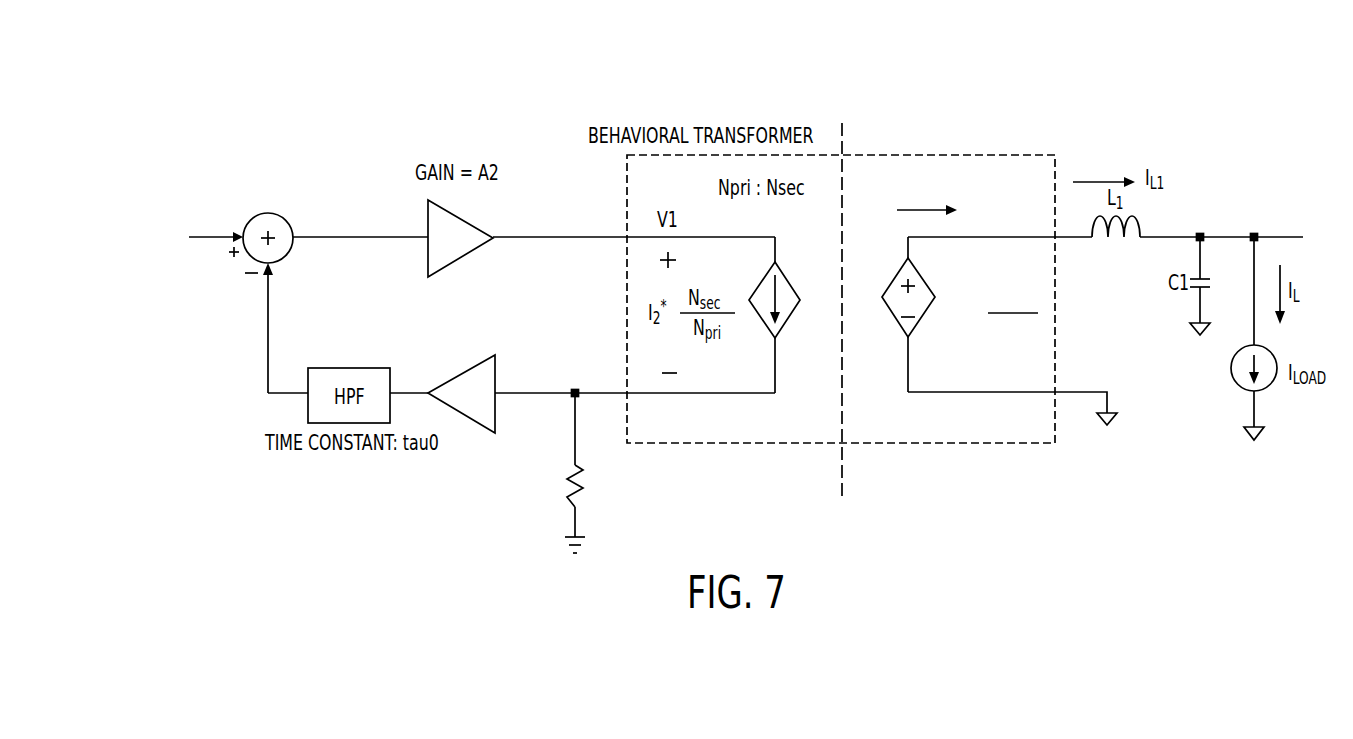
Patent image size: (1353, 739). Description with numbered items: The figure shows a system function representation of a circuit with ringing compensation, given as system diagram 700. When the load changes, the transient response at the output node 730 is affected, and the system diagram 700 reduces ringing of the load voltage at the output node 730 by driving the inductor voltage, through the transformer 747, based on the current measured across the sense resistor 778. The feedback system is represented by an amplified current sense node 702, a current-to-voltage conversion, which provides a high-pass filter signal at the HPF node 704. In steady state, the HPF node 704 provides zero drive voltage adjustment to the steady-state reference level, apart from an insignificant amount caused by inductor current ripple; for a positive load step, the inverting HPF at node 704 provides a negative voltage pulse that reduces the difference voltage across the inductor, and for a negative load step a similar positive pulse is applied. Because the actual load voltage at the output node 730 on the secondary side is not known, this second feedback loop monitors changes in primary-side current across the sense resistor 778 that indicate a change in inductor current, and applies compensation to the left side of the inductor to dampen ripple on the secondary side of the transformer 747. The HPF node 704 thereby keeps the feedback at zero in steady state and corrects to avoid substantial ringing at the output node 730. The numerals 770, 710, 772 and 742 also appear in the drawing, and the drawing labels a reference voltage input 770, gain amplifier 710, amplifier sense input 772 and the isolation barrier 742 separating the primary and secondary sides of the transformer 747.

The system diagram 700 is at (188, 103).
The reference voltage input 770 is at (211, 236).
The high-pass filter node 704 is at (267, 376).
The gain amplifier output 710 is at (410, 392).
The amplified current sense node 702 is at (576, 358).
The amplifier sense input 772 is at (497, 405).
The sense resistor 778 is at (582, 489).
The transformer 747 is at (937, 153).
The isolation barrier 742 is at (845, 463).
The output node 730 is at (1226, 234).